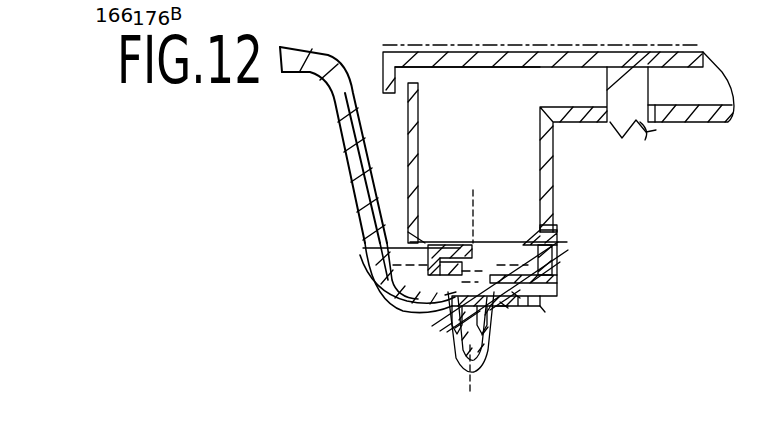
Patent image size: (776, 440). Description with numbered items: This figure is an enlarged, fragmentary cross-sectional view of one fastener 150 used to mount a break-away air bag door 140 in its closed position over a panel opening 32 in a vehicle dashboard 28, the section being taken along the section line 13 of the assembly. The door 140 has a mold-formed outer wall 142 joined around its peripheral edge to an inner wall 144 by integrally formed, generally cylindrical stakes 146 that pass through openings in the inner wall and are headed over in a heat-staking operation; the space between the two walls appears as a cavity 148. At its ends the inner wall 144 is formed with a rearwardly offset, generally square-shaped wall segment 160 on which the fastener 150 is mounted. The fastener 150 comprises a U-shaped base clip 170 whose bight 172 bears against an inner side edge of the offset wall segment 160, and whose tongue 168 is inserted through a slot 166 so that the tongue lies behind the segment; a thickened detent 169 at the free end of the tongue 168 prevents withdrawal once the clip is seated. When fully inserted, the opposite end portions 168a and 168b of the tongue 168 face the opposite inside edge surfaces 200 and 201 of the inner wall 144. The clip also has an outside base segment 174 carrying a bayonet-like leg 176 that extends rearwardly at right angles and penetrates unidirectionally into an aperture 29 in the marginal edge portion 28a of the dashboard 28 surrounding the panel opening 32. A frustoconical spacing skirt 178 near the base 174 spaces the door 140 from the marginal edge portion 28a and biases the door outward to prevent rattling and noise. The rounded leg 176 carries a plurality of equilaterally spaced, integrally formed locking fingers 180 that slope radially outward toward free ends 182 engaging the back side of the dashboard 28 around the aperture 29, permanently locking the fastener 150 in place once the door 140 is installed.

The section line 13 is at (440, 204).
The dashboard 28 is at (346, 63).
The marginal edge portion 28a is at (503, 303).
The aperture 29 is at (445, 295).
The panel opening 32 is at (545, 297).
The door 140 is at (530, 33).
The outer wall 142 is at (450, 60).
The inner wall 144 is at (696, 124).
The stake 146 is at (596, 126).
The cavity 148 is at (496, 129).
The fastener 150 is at (562, 268).
The offset wall segment 160 is at (478, 245).
The slot 166 is at (372, 265).
The tongue 168 is at (445, 244).
The tongue end portion 168a is at (363, 248).
The tongue end portion 168b is at (550, 228).
The thickened detent 169 is at (370, 250).
The base clip 170 is at (552, 287).
The bight 172 is at (552, 258).
The outside base segment 174 is at (515, 292).
The bayonet-like leg 176 is at (456, 348).
The frustoconical spacing skirt 178 is at (378, 292).
The locking finger 180 is at (487, 318).
The free end 182 is at (507, 302).
The inside edge surface 200 is at (422, 226).
The inside edge surface 201 is at (541, 237).